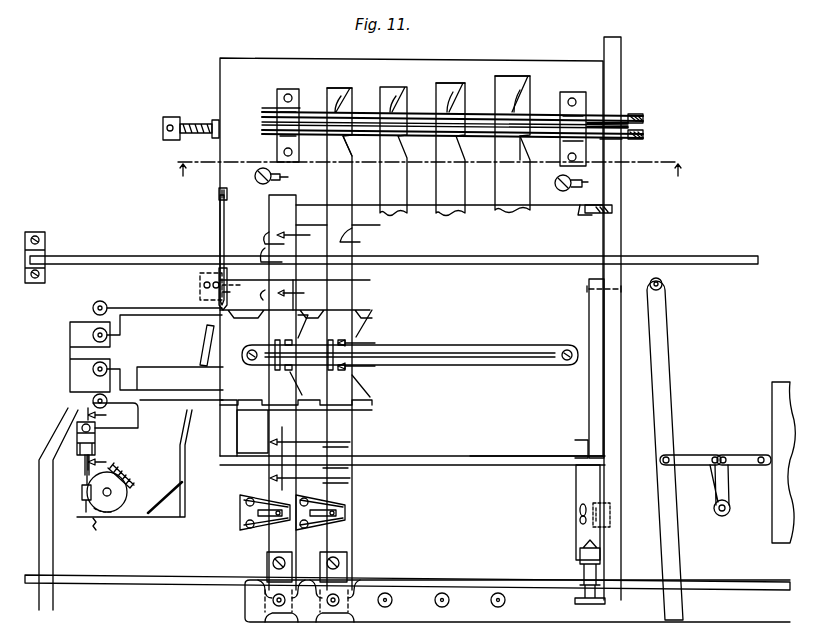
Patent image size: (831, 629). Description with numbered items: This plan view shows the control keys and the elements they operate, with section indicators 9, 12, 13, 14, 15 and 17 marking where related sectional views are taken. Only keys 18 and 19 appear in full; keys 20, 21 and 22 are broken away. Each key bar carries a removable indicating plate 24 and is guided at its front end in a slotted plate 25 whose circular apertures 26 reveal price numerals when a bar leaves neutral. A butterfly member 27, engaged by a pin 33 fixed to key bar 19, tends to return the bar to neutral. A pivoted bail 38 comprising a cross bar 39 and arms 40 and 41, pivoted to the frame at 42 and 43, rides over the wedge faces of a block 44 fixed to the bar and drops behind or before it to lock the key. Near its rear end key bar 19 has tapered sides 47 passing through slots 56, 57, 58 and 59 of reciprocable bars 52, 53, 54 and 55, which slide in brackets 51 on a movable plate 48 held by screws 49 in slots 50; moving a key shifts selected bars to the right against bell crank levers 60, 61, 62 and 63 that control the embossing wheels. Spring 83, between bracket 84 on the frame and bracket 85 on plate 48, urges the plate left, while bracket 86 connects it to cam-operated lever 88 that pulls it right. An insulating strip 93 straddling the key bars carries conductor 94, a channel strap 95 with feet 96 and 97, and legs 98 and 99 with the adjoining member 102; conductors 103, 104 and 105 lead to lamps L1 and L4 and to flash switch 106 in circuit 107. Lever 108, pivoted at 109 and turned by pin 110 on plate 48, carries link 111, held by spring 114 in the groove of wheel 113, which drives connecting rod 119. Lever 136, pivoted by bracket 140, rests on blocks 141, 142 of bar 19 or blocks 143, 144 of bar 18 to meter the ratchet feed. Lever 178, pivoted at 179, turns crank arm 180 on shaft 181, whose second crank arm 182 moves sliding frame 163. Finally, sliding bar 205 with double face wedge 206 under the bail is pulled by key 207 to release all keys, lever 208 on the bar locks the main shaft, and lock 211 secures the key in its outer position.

The section line 9 is at (430, 179).
The direction arrow 12 is at (330, 458).
The direction arrow 13 is at (366, 357).
The direction arrow 14 is at (300, 268).
The direction arrow 15 is at (107, 438).
The frame member 17 is at (407, 318).
The control key 18 is at (282, 195).
The key bar 19 is at (352, 184).
The key bar 20 is at (392, 214).
The key bar 21 is at (445, 214).
The key bar 22 is at (505, 212).
The indicating plate 24 is at (348, 572).
The slotted plate 25 is at (541, 612).
The circular aperture 26 is at (345, 600).
The butterfly member 27 is at (332, 500).
The pin 33 is at (340, 514).
The bail 38 is at (484, 451).
The cross bar 39 is at (418, 457).
The arm 40 is at (220, 433).
The arm 41 is at (589, 404).
The pivot 42 is at (229, 290).
The pivot 43 is at (587, 290).
The block 44 is at (352, 434).
The tapered side 47 is at (352, 142).
The plate 48 is at (252, 60).
The screw 49 is at (258, 171).
The slot 50 is at (282, 177).
The bracket 51 is at (292, 89).
The reciprocable bar 52 is at (266, 108).
The reciprocable bar 53 is at (265, 114).
The reciprocable bar 54 is at (265, 124).
The reciprocable bar 55 is at (266, 133).
The slot 56 is at (332, 108).
The slot 57 is at (410, 108).
The slot 58 is at (448, 96).
The slot 59 is at (520, 112).
The bell crank lever 60 is at (636, 113).
The bell crank lever 61 is at (643, 125).
The bell crank lever 62 is at (644, 135).
The bell crank lever 63 is at (633, 140).
The spring 83 is at (200, 123).
The bracket 84 is at (172, 117).
The bracket 85 is at (215, 139).
The bracket 86 is at (584, 215).
The lever 88 is at (614, 210).
The insulating strip 93 is at (431, 349).
The electric conductor 94 is at (478, 355).
The strap 95 is at (295, 348).
The foot 96 is at (331, 337).
The foot 97 is at (305, 381).
The leg 98 is at (362, 375).
The leg 99 is at (365, 332).
The rail 102 is at (360, 312).
The conductor 103 is at (70, 373).
The conductor 104 is at (144, 408).
The conductor 105 is at (142, 367).
The flash switch 106 is at (100, 443).
The electrical circuit 107 is at (55, 556).
The lever 108 is at (218, 233).
The pivot 109 is at (212, 294).
The pin 110 is at (227, 206).
The link 111 is at (162, 520).
The wheel 113 is at (126, 496).
The spring 114 is at (170, 492).
The connecting rod 119 is at (84, 470).
The lever 136 is at (722, 257).
The bracket 140 is at (47, 250).
The block 141 is at (340, 285).
The block 142 is at (360, 229).
The block 143 is at (269, 234).
The block 144 is at (265, 254).
The sliding frame 163 is at (793, 370).
The lever 178 is at (672, 392).
The pivot 179 is at (663, 286).
The crank arm 180 is at (710, 470).
The shaft 181 is at (724, 516).
The crank arm 182 is at (730, 486).
The sliding bar 205 is at (582, 488).
The double face wedge 206 is at (566, 443).
The key 207 is at (598, 604).
The lever 208 is at (612, 512).
The lock 211 is at (578, 514).
The lever position L1 is at (146, 308).
The lamp L4 is at (75, 418).